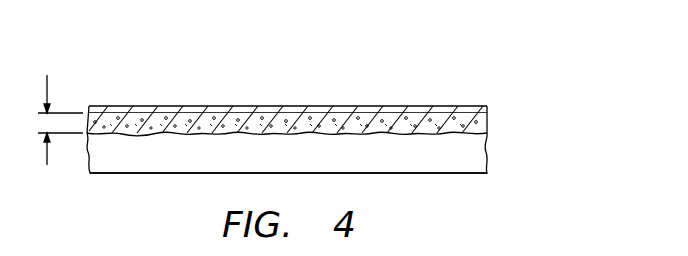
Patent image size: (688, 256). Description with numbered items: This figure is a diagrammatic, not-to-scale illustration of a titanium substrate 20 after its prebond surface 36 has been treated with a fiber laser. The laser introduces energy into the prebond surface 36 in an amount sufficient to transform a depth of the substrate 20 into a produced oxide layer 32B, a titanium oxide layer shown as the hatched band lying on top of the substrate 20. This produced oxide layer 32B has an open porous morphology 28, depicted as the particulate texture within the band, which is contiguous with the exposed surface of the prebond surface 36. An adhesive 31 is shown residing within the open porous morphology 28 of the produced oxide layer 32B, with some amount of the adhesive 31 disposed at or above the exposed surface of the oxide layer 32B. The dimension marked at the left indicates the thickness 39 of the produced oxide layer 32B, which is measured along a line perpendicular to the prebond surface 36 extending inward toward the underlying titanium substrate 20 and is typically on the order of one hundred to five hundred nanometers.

The titanium substrate 20 is at (475, 148).
The open porous morphology 28 is at (147, 132).
The adhesive 31 is at (438, 108).
The produced oxide layer 32B is at (484, 125).
The prebond surface 36 is at (270, 89).
The thickness 39 is at (48, 88).